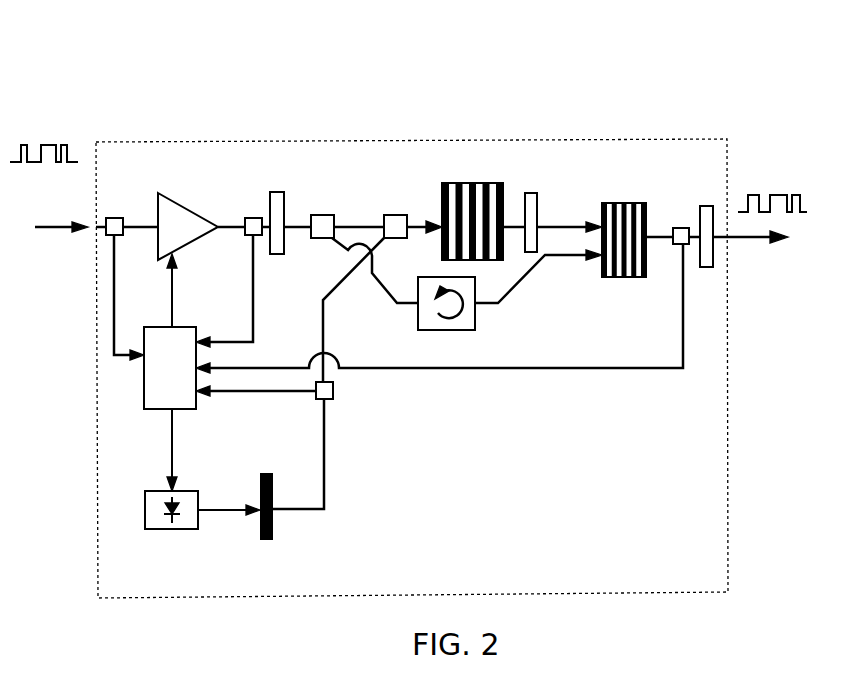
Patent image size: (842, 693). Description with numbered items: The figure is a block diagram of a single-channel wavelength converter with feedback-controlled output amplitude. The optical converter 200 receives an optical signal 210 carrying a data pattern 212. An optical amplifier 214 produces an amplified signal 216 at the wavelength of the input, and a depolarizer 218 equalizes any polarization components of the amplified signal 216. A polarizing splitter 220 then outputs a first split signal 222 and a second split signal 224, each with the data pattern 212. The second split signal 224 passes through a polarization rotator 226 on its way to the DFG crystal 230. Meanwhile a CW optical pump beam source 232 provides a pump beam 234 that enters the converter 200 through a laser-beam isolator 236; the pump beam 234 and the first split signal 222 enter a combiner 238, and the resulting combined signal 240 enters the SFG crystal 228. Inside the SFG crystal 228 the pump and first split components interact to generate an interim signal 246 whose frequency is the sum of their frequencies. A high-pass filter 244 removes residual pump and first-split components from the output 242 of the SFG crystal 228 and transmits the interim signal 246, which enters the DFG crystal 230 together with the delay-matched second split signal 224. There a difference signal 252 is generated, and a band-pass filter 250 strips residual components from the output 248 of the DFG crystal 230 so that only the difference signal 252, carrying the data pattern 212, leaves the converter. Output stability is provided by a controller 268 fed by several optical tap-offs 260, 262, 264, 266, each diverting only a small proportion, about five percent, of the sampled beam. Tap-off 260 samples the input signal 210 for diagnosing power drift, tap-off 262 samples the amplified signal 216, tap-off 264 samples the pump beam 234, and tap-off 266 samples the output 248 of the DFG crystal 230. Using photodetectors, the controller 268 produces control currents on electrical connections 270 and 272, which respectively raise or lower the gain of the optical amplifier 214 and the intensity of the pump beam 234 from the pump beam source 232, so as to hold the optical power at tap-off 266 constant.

The optical converter 200 is at (512, 124).
The optical signal 210 is at (86, 215).
The data pattern 212 is at (408, 163).
The optical amplifier 214 is at (185, 205).
The amplified signal 216 is at (232, 222).
The depolarizer 218 is at (286, 192).
The polarizing splitter 220 is at (312, 215).
The first split signal 222 is at (340, 220).
The second split signal 224 is at (404, 305).
The polarization rotator 226 is at (433, 330).
The SFG crystal 228 is at (466, 183).
The DFG crystal 230 is at (608, 203).
The CW optical pump beam source 232 is at (153, 530).
The pump beam 234 is at (218, 503).
The laser-beam isolator 236 is at (265, 540).
The combiner 238 is at (386, 214).
The combined signal 240 is at (428, 220).
The output of SFG crystal 242 is at (510, 222).
The high-pass filter 244 is at (533, 193).
The interim signal 246 is at (560, 220).
The output of DFG crystal 248 is at (660, 232).
The band-pass filter 250 is at (703, 206).
The difference signal 252 is at (740, 243).
The tap-off 260 is at (123, 235).
The tap-off 262 is at (249, 237).
The tap-off 264 is at (333, 395).
The tap-off 266 is at (675, 245).
The controller 268 is at (162, 412).
The electrical connection 270 is at (172, 310).
The electrical connection 272 is at (173, 447).